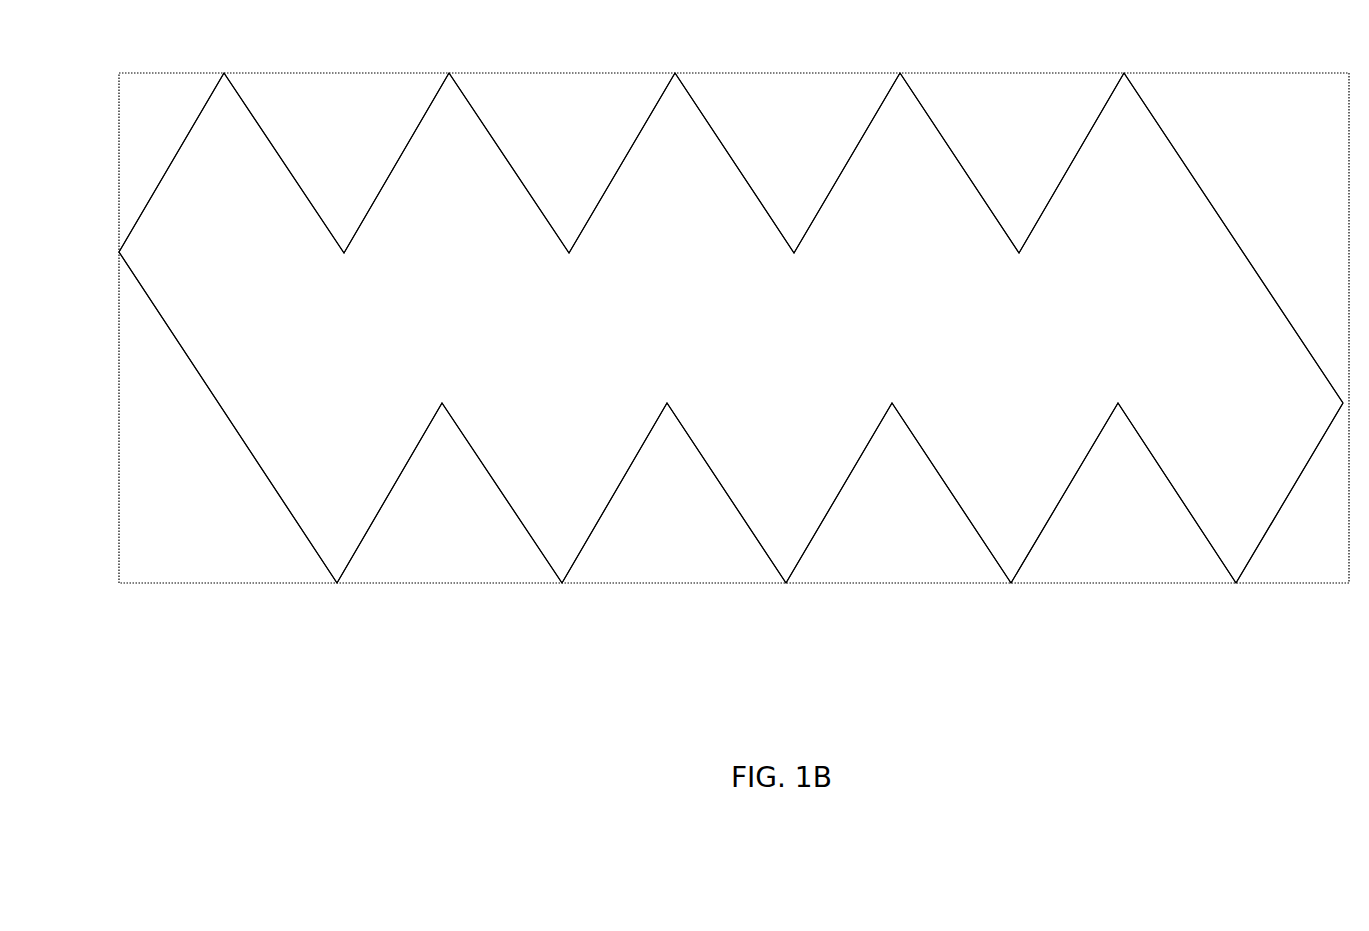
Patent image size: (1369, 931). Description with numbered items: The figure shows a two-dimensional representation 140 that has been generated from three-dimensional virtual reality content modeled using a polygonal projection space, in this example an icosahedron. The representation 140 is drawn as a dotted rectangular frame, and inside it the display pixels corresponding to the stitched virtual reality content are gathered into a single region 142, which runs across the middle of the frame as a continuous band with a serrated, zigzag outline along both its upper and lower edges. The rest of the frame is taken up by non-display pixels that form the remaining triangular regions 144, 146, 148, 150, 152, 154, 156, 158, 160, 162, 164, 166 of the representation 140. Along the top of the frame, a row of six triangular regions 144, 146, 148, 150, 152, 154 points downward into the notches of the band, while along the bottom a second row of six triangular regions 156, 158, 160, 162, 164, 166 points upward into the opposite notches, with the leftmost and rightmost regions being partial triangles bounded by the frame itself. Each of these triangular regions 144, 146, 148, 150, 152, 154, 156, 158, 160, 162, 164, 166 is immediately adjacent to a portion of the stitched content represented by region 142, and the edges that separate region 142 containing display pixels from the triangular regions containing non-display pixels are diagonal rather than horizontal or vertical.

The representation 140 is at (734, 307).
The region 142 is at (731, 328).
The triangular region 144 is at (171, 162).
The triangular region 146 is at (336, 163).
The triangular region 148 is at (562, 163).
The triangular region 150 is at (787, 163).
The triangular region 152 is at (1012, 163).
The triangular region 154 is at (1233, 238).
The triangular region 156 is at (228, 417).
The triangular region 158 is at (449, 493).
The triangular region 160 is at (674, 493).
The triangular region 162 is at (898, 493).
The triangular region 164 is at (1123, 493).
The triangular region 166 is at (1289, 493).